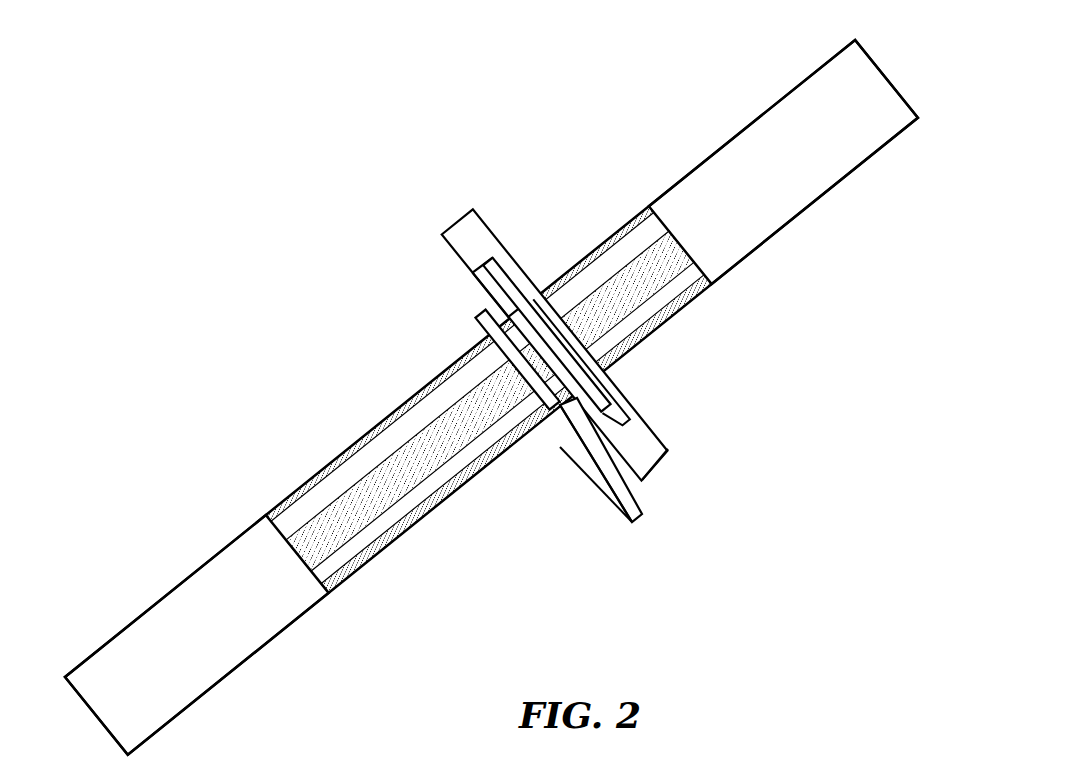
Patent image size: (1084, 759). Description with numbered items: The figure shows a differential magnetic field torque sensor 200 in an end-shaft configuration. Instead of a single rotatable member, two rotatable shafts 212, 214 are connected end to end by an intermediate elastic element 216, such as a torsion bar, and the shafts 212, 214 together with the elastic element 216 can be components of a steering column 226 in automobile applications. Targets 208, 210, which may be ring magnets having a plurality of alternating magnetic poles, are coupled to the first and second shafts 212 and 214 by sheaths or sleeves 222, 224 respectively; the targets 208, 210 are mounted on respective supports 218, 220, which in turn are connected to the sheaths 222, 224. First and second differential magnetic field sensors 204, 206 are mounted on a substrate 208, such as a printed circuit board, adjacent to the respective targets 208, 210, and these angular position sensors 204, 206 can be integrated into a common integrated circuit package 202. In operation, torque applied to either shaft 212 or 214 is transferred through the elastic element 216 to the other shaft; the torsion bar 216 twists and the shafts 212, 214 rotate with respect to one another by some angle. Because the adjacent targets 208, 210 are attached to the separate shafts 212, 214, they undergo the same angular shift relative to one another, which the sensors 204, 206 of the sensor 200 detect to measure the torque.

The differential magnetic field torque sensor 200 is at (478, 150).
The integrated circuit package 202 is at (632, 488).
The first differential magnetic field sensor 204 is at (570, 442).
The second differential magnetic field sensor 206 is at (608, 480).
The target 208 is at (484, 287).
The target 210 is at (452, 246).
The first shaft 212 is at (244, 662).
The second shaft 214 is at (772, 106).
The elastic element 216 is at (340, 493).
The support 218 is at (602, 413).
The support 220 is at (667, 447).
The sheath 222 is at (373, 422).
The sheath 224 is at (627, 220).
The steering column 226 is at (203, 565).